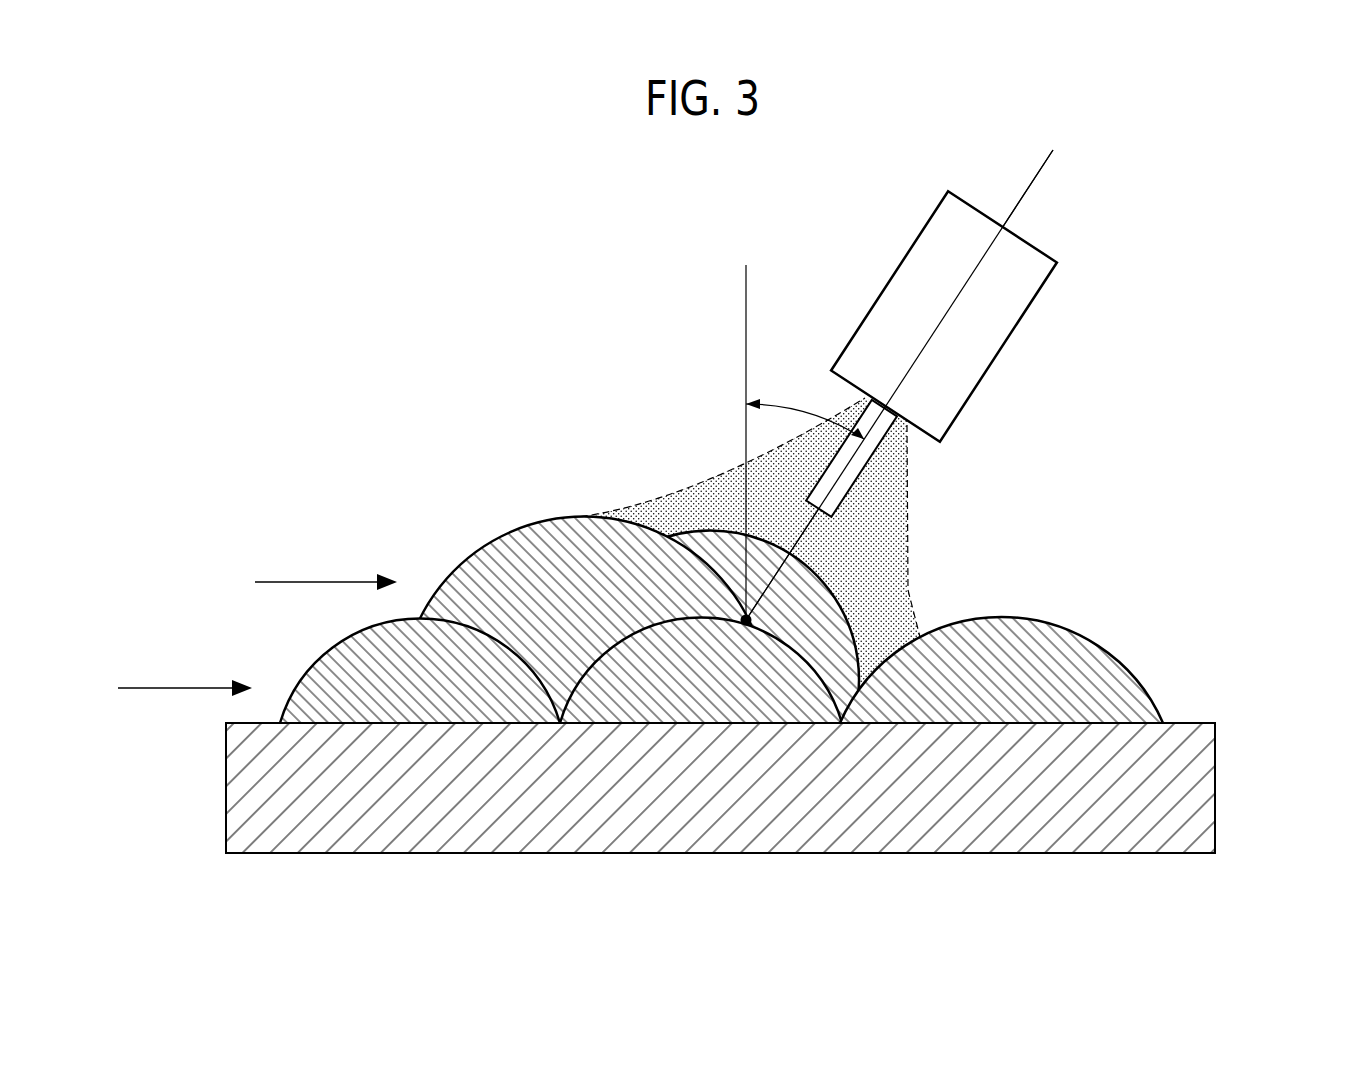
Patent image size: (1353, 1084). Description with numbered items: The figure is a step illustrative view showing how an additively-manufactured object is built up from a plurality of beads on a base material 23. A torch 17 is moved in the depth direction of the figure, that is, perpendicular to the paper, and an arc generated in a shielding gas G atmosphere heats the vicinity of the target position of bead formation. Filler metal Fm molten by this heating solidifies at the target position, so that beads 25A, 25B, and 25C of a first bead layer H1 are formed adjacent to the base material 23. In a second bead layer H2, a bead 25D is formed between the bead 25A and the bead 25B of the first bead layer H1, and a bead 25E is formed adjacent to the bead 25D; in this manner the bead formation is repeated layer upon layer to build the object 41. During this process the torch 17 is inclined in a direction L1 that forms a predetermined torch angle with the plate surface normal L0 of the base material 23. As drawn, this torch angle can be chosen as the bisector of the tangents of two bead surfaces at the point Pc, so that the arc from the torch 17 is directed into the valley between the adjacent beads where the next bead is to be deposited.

The torch 17 is at (1012, 322).
The base material 23 is at (1200, 790).
The bead 25A is at (443, 703).
The bead 25B is at (717, 703).
The bead 25C is at (1005, 703).
The bead 25D is at (487, 548).
The bead 25E is at (714, 543).
The wavelength conversion member 41 is at (775, 659).
The plate surface normal L0 is at (744, 300).
The direction L1 is at (1030, 183).
The point Pc is at (745, 618).
The filler metal Fm is at (842, 485).
The shielding gas G is at (902, 588).
The first bead layer H1 is at (163, 690).
The second bead layer H2 is at (304, 585).